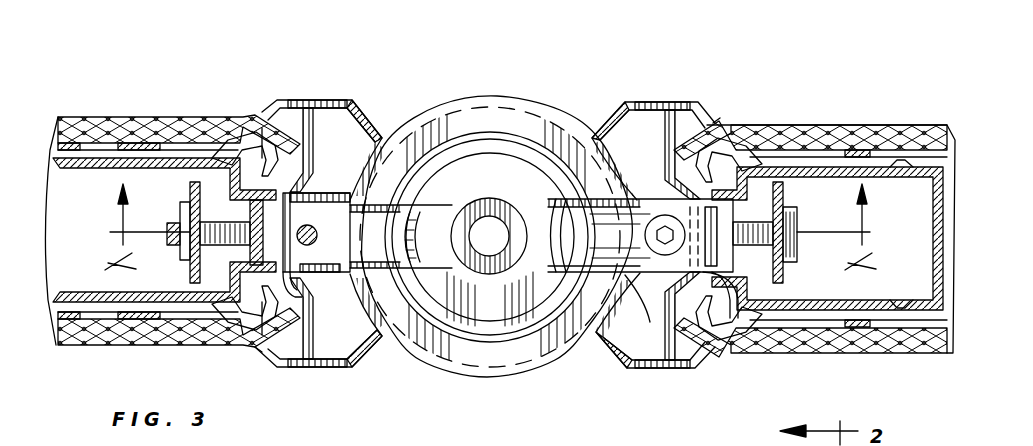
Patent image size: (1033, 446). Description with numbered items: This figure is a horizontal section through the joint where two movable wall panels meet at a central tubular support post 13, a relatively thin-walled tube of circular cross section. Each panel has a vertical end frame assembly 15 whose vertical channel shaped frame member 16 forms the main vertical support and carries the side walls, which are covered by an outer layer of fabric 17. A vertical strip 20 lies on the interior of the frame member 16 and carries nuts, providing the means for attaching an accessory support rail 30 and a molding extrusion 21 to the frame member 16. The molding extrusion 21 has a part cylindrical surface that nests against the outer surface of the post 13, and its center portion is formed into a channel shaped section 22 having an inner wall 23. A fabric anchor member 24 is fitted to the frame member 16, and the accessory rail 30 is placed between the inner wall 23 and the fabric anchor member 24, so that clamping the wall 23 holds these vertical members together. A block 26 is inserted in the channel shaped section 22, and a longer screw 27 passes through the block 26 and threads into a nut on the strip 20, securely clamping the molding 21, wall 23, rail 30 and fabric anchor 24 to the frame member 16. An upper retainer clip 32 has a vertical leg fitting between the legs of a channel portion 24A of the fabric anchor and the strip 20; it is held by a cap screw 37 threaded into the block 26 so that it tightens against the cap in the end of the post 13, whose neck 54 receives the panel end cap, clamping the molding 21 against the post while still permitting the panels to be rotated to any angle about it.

The central tubular support post 13 is at (480, 378).
The vertical end frame assembly 15 is at (716, 96).
The vertical channel shaped frame member 16 is at (93, 155).
The outer layer of fabric 17 is at (903, 125).
The vertical strip 20 is at (190, 190).
The molding extrusion 21 is at (310, 100).
The channel shaped section 22 is at (322, 190).
The inner wall 23 is at (282, 292).
The fabric anchor member 24 is at (236, 120).
The channel portion 24A is at (265, 190).
The block 26 is at (420, 206).
The longer screw 27 is at (175, 250).
The accessory support rail 30 is at (345, 100).
The upper retainer clip 32 is at (562, 165).
The cap screw 37 is at (310, 245).
The neck 54 is at (515, 207).